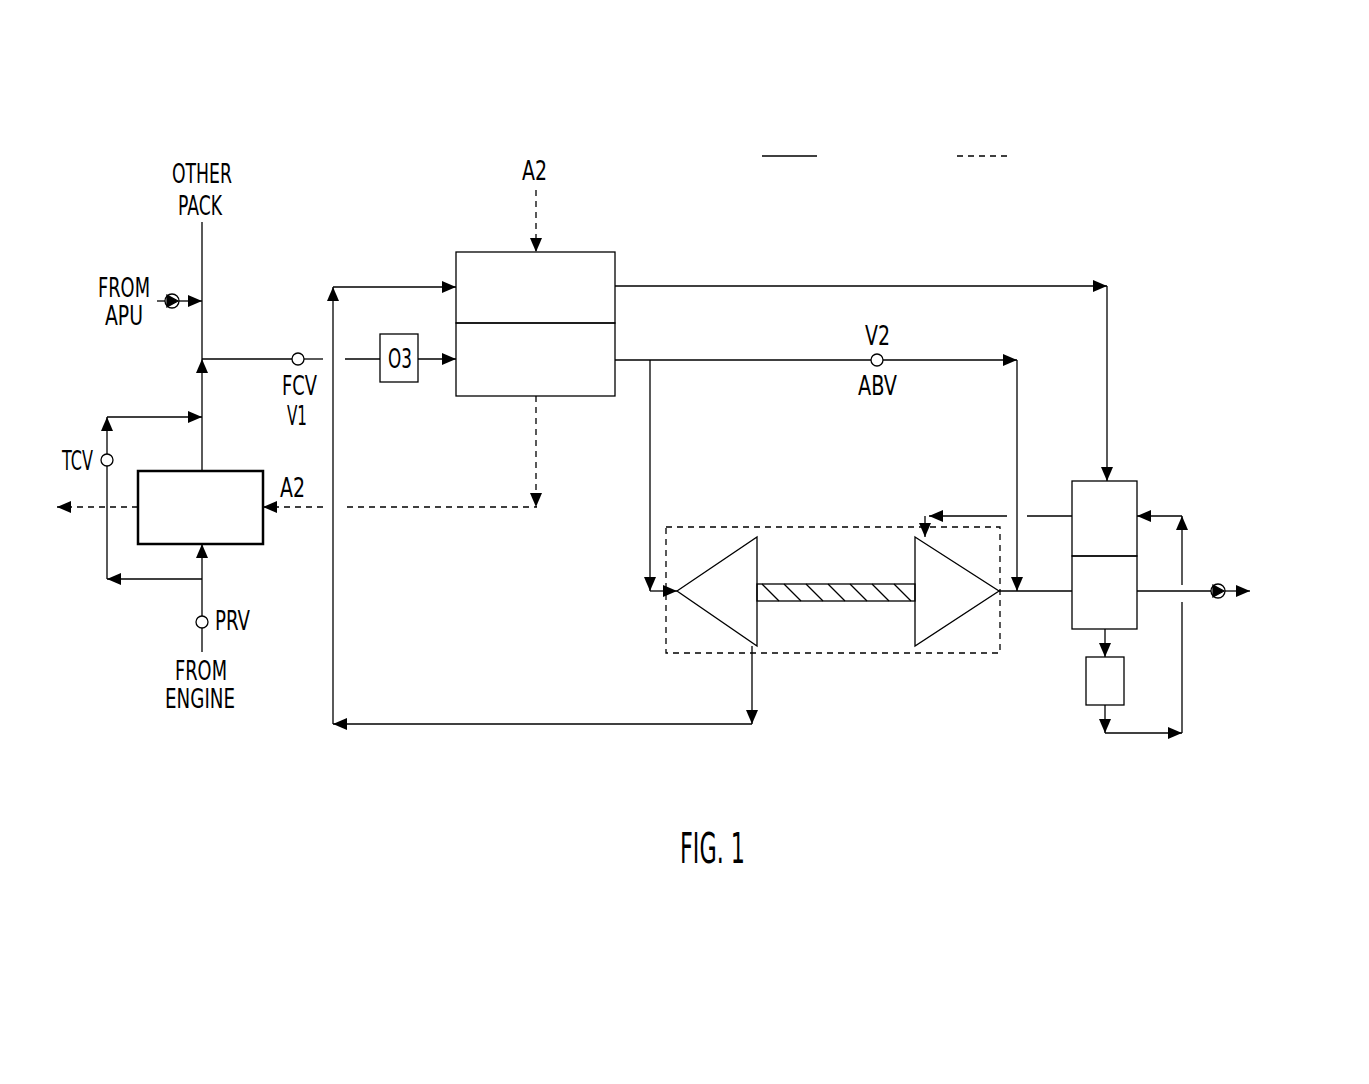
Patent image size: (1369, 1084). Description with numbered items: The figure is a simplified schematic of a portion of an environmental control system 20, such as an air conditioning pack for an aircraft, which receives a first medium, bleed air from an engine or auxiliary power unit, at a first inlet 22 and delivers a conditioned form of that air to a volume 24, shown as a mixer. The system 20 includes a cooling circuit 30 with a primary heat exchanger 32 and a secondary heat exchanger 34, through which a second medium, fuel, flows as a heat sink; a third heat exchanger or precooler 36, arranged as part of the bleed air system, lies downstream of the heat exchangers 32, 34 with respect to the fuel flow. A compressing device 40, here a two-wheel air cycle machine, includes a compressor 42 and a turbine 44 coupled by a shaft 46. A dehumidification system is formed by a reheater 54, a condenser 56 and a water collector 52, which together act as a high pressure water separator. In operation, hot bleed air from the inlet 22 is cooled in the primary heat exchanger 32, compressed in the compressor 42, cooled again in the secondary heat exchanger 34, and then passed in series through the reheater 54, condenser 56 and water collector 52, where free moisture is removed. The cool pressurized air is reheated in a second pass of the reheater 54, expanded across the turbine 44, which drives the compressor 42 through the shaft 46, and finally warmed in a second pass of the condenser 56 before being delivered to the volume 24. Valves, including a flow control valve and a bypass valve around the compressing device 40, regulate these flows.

The environmental control system 20 is at (1139, 214).
The first inlet 22 is at (209, 358).
The volume 24 is at (1242, 593).
The cooling circuit 30 is at (589, 294).
The primary heat exchanger 32 is at (603, 392).
The secondary heat exchanger 34 is at (603, 317).
The precooler 36 is at (213, 536).
The compressing device 40 is at (833, 577).
The compressor 42 is at (722, 575).
The turbine 44 is at (930, 617).
The shaft 46 is at (830, 592).
The water collector 52 is at (1083, 685).
The reheater 54 is at (1122, 495).
The condenser 56 is at (1080, 605).